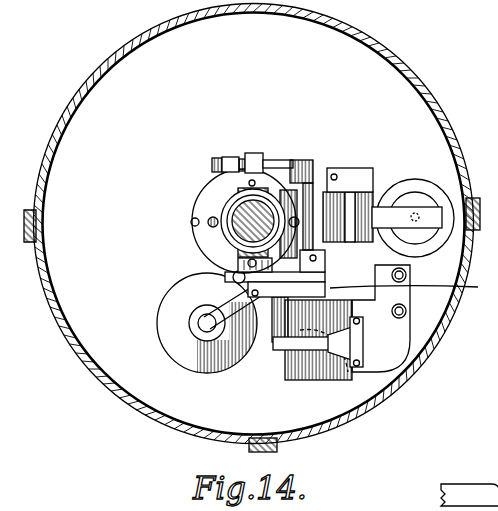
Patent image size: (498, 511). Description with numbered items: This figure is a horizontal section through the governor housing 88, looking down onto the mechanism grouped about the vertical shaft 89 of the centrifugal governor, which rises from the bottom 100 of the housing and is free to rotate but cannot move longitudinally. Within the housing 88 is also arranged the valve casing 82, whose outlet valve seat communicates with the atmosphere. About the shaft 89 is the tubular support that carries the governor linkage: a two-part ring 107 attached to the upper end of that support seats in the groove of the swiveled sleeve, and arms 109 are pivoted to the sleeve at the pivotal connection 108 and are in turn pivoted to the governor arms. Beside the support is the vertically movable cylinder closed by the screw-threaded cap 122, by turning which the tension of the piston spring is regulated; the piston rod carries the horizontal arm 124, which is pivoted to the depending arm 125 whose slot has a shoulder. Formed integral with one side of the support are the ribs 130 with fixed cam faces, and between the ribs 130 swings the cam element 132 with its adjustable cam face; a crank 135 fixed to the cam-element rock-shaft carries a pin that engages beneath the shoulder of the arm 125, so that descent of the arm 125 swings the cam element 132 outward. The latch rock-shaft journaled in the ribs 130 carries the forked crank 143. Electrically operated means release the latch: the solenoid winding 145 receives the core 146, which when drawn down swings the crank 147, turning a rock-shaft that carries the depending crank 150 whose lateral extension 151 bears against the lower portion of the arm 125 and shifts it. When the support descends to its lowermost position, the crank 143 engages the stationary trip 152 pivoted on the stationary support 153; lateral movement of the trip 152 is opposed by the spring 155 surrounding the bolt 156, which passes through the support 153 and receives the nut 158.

The bottom of the housing 100 is at (252, 228).
The housing 88 is at (453, 329).
The cap 122 is at (167, 311).
The horizontal arm 124 is at (237, 296).
The depending arm 125 is at (233, 278).
The arms 109 is at (232, 266).
The two-part ring 107 is at (213, 211).
The pivotal connection 108 is at (258, 194).
The vertical shaft 89 is at (240, 214).
The nut 158 is at (213, 162).
The spring 155 is at (212, 170).
The stationary support 153 is at (232, 160).
The stationary trip 152 is at (246, 154).
The forked crank 143 is at (264, 156).
The ribs 130 is at (315, 175).
The swinging cam element 132 is at (330, 180).
The valve casing 82 is at (417, 180).
The crank 135 is at (322, 272).
The lateral extension 151 is at (322, 284).
The depending crank 150 is at (322, 299).
The bolt 156 is at (414, 288).
The crank 147 is at (300, 340).
The solenoid winding 145 is at (303, 383).
The core 146 is at (334, 356).